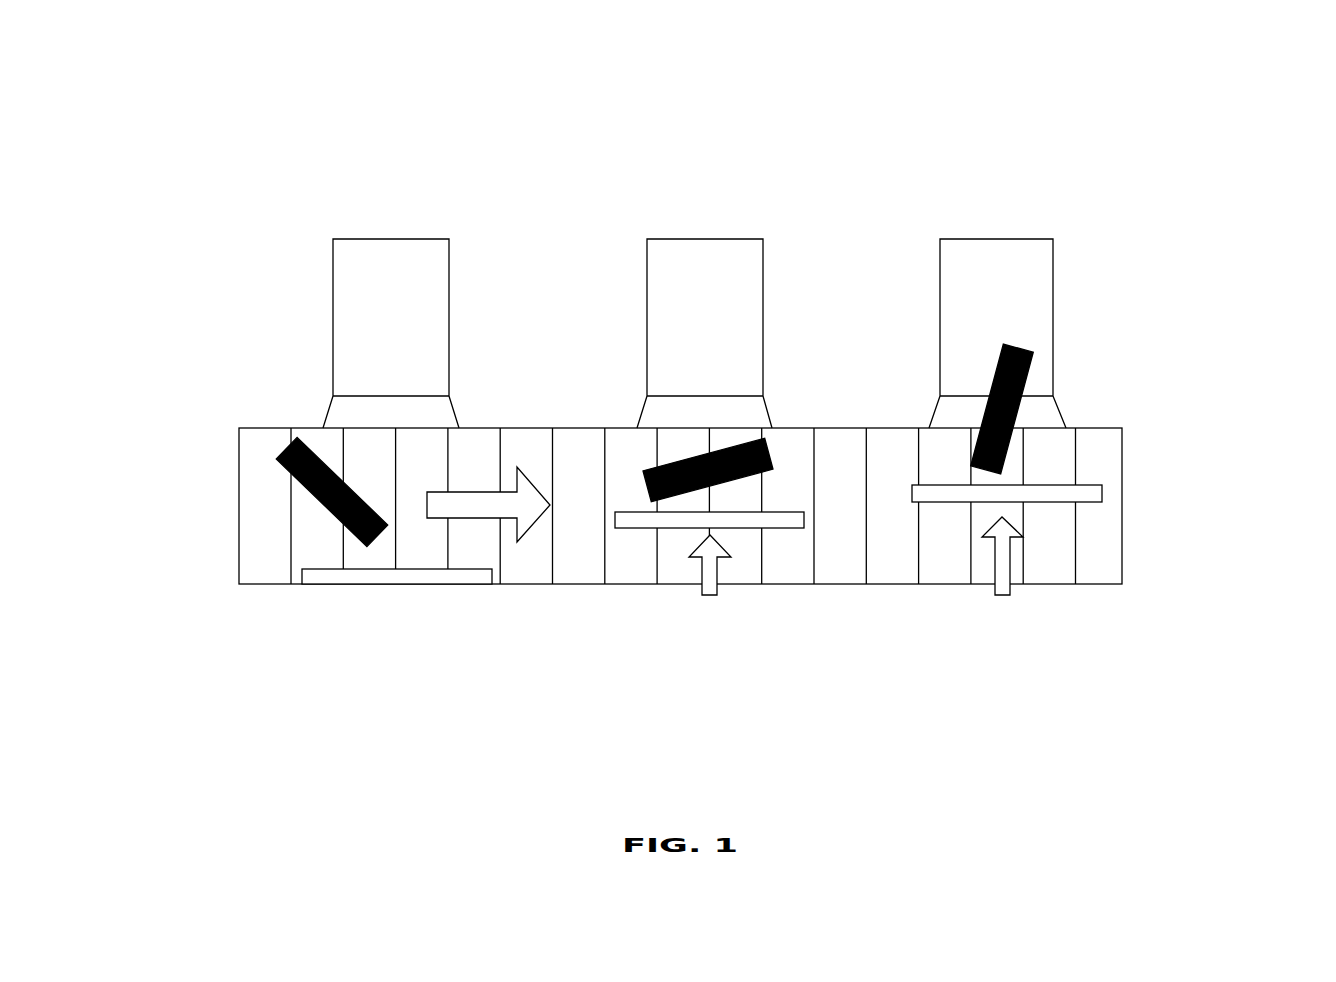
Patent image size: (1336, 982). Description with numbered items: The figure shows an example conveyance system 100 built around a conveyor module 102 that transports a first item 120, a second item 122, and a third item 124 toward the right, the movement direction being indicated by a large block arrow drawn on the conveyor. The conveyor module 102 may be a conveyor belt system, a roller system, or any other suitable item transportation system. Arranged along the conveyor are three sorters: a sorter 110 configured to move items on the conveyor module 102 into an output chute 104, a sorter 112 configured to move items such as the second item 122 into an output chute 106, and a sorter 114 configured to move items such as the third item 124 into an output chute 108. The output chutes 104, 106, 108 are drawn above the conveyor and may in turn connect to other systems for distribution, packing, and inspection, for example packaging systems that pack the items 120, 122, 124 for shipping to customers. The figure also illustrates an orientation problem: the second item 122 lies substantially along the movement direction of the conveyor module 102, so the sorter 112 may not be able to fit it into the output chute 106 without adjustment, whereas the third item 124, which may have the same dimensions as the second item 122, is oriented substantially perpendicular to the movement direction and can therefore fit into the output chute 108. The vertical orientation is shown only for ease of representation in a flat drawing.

The conveyance system 100 is at (1158, 100).
The conveyor module 102 is at (222, 553).
The output chute 104 is at (313, 229).
The output chute 106 is at (638, 229).
The output chute 108 is at (925, 229).
The sorter 110 is at (368, 627).
The sorter 112 is at (681, 627).
The sorter 114 is at (973, 627).
The first item 120 is at (248, 394).
The second item 122 is at (604, 389).
The third item 124 is at (968, 385).